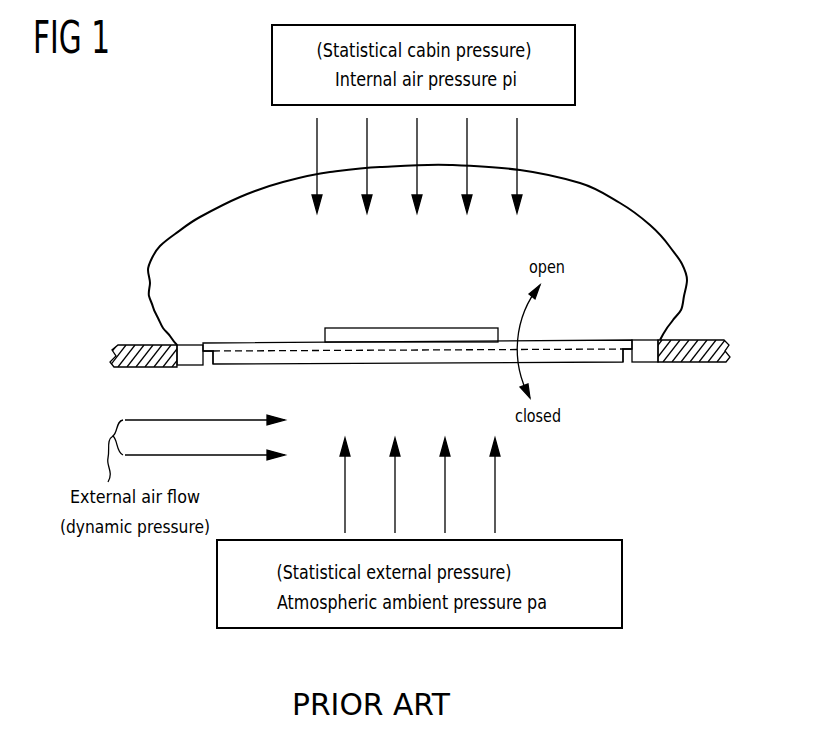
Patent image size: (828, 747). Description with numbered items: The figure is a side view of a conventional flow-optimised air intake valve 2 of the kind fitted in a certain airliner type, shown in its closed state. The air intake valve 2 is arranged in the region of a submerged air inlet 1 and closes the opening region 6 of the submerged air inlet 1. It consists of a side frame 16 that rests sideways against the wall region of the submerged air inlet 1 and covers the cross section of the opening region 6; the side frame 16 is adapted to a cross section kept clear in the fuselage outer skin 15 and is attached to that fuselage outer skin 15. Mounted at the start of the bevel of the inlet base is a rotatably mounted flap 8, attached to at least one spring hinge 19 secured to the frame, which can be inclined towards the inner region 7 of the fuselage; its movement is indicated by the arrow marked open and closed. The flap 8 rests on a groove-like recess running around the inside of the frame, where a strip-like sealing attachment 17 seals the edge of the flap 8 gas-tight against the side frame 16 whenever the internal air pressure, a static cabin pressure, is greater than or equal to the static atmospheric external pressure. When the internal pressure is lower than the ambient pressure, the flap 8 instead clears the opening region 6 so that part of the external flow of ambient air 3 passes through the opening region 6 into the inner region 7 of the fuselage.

The submerged air inlet 1 is at (627, 232).
The air intake valve 2 is at (583, 397).
The ambient air 3 is at (169, 450).
The opening region 6 is at (437, 317).
The inner region of the fuselage 7 is at (257, 158).
The flap 8 is at (295, 351).
The fuselage outer skin 15 is at (143, 345).
The side frame 16 is at (189, 356).
The sealing attachment 17 is at (210, 363).
The spring hinge 19 is at (381, 334).